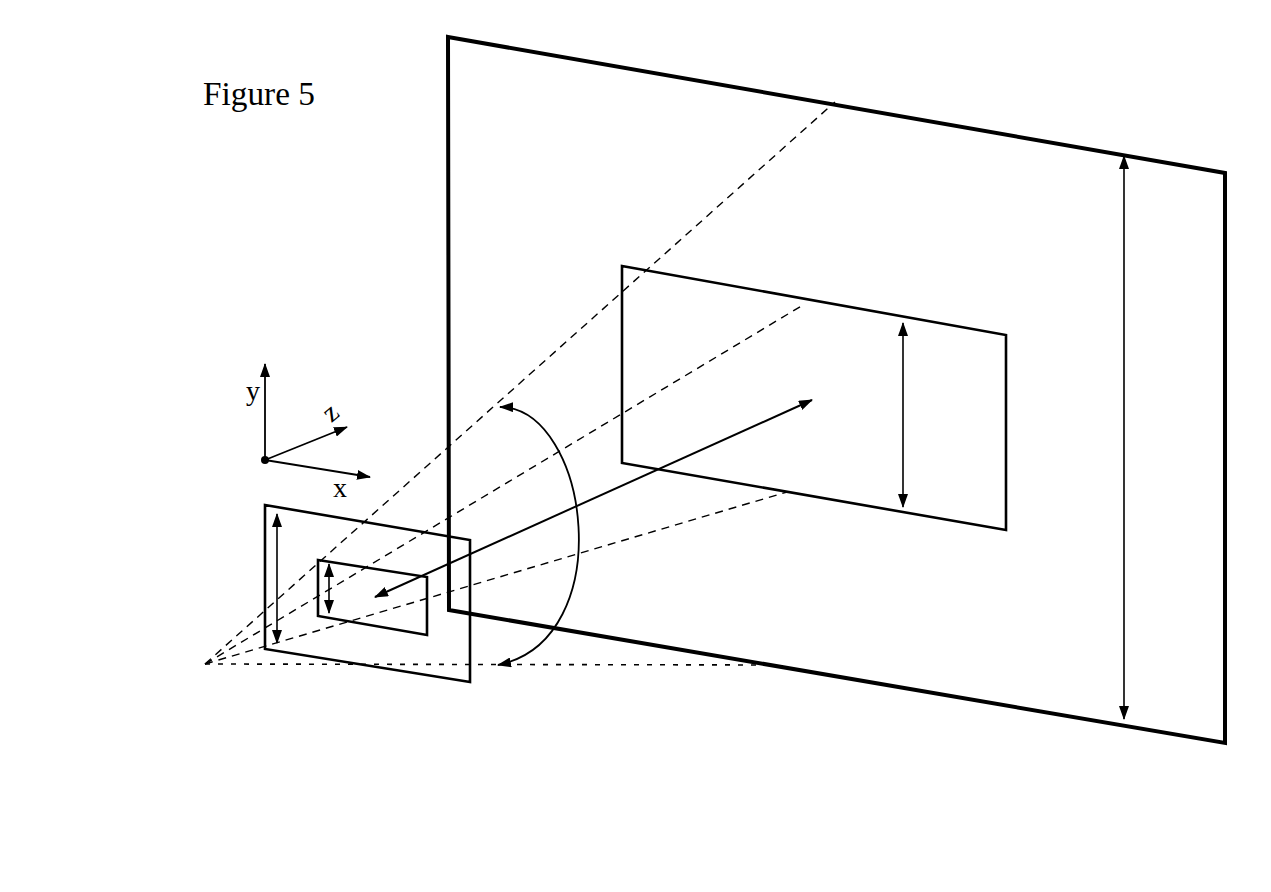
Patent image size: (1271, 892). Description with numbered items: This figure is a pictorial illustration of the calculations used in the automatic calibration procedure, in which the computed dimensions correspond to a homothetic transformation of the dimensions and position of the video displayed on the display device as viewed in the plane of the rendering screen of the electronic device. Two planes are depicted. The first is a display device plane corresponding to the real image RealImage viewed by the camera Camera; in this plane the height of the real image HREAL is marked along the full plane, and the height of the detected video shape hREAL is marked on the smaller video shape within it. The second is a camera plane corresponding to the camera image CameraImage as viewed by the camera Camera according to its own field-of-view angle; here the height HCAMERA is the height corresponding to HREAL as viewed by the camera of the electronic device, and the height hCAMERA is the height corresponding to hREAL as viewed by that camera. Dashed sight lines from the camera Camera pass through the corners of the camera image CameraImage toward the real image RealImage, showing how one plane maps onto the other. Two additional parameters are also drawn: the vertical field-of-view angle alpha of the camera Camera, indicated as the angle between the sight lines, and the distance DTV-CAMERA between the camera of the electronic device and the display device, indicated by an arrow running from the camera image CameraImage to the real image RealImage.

The real image RealImage is at (842, 413).
The camera image CameraImage is at (400, 623).
The camera Camera is at (486, 405).
The height of the real image HREAL is at (1166, 437).
The height of the detected video shape hREAL is at (942, 415).
The height corresponding to H_REAL as viewed by the camera HCAMERA is at (216, 578).
The height corresponding to the detected video shape as viewed by the camera hCAMERA is at (372, 609).
The distance between the camera and the display device DTV-CAMERA is at (593, 498).
The vertical FoV angle of the camera alpha is at (547, 536).